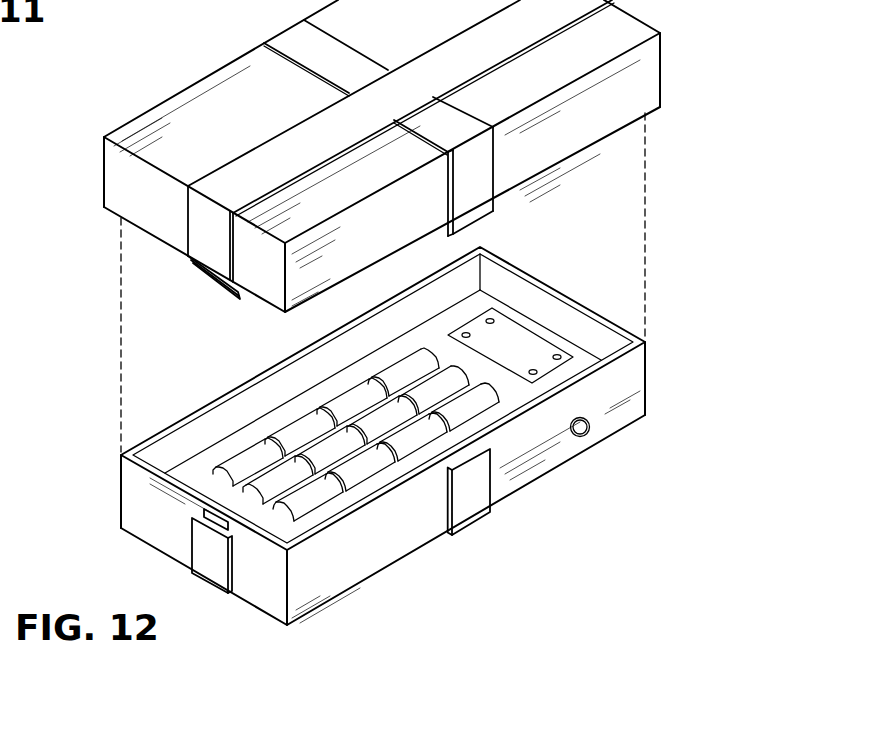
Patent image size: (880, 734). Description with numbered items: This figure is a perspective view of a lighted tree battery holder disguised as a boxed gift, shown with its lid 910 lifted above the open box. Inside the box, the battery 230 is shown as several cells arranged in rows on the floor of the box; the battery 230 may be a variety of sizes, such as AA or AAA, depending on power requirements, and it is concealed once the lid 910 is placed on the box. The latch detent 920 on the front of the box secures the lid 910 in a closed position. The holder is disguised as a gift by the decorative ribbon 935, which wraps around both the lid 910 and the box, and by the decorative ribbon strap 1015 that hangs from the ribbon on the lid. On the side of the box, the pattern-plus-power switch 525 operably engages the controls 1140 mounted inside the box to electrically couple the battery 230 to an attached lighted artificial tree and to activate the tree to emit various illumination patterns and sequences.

The lid 910 is at (612, 135).
The decorative ribbon 935 is at (494, 206).
The decorative ribbon strap 1015 is at (209, 287).
The controls 1140 is at (548, 338).
The battery 230 is at (214, 469).
The pattern-plus-power switch 525 is at (583, 438).
The latch detent 920 is at (197, 514).